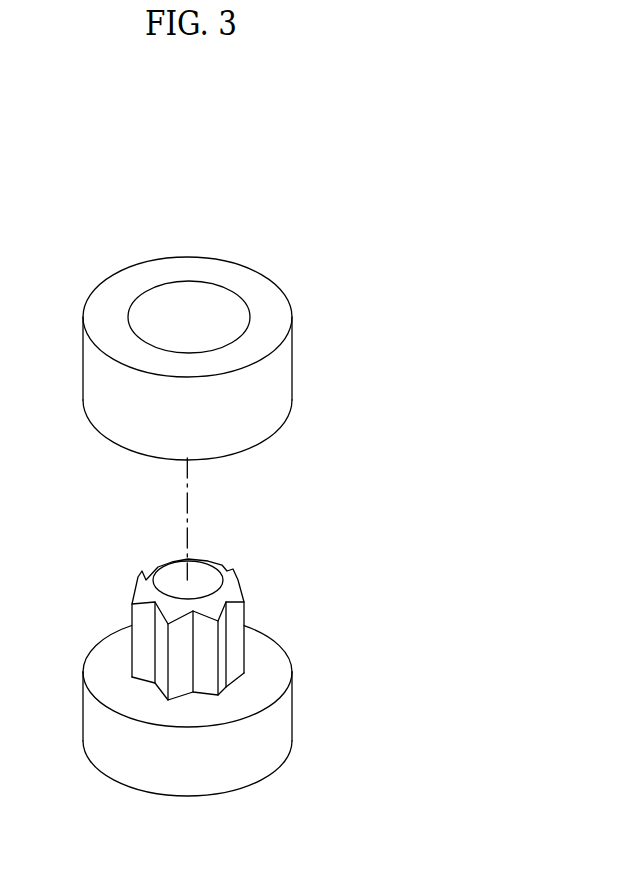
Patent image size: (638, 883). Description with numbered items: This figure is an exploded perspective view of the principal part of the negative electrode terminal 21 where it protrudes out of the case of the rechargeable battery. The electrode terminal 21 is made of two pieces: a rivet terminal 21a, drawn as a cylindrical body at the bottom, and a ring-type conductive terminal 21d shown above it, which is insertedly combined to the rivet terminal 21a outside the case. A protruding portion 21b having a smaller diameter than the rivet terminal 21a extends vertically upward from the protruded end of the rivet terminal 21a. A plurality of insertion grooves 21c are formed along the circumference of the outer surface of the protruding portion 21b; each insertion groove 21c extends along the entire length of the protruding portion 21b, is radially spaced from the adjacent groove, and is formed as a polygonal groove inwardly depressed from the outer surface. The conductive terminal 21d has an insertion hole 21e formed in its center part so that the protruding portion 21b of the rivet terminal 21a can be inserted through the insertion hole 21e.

The electrode terminal 21 is at (286, 242).
The rivet terminal 21a is at (275, 723).
The protruding portion 21b is at (208, 577).
The insertion grooves 21c is at (192, 680).
The conductive terminal 21d is at (272, 383).
The insertion hole 21e is at (137, 334).